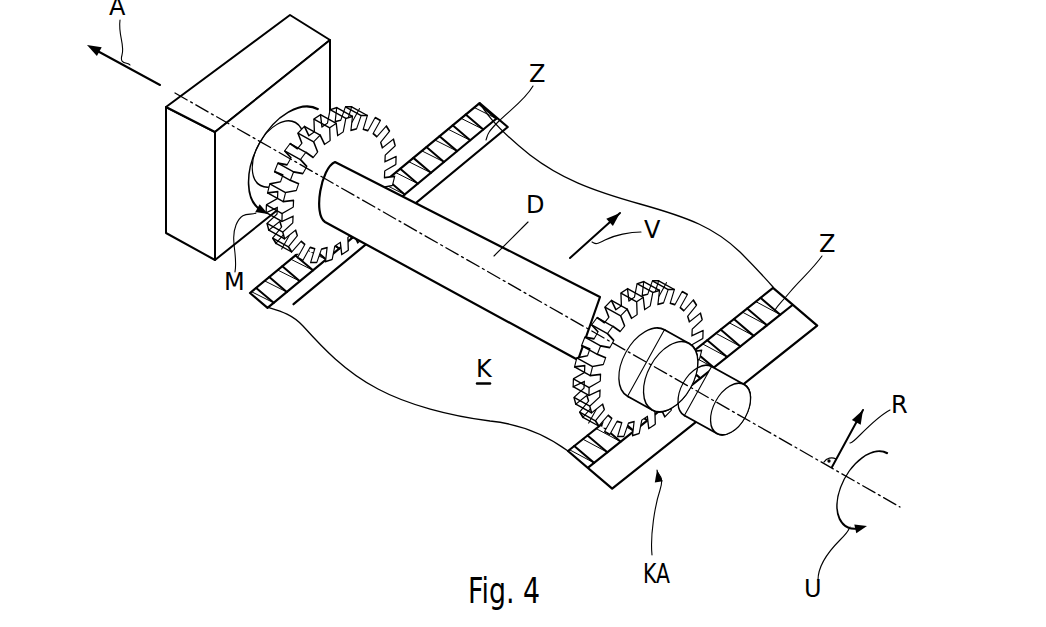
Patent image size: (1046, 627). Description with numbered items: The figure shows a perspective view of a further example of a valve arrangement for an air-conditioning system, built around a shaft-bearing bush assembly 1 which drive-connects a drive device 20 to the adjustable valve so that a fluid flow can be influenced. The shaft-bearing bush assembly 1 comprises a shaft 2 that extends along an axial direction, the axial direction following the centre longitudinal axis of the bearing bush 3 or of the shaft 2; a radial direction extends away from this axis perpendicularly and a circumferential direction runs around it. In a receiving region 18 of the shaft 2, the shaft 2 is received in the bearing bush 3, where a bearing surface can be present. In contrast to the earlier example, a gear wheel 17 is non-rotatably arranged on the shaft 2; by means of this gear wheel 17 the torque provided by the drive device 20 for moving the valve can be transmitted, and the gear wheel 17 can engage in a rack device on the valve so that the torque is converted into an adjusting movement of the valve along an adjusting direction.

The shaft-bearing bush assembly 1 is at (530, 304).
The shaft 2 is at (457, 293).
The bearing bush 3 is at (670, 400).
The gear wheel 17 is at (495, 251).
The receiving region 18 is at (713, 387).
The drive device 20 is at (190, 172).